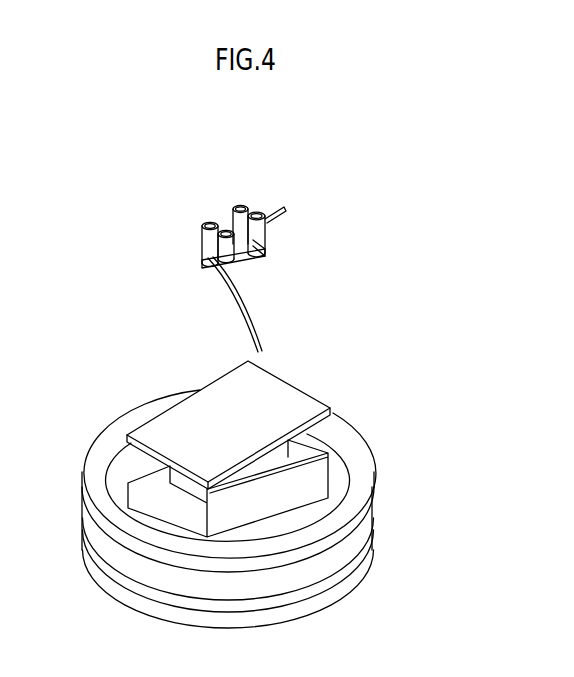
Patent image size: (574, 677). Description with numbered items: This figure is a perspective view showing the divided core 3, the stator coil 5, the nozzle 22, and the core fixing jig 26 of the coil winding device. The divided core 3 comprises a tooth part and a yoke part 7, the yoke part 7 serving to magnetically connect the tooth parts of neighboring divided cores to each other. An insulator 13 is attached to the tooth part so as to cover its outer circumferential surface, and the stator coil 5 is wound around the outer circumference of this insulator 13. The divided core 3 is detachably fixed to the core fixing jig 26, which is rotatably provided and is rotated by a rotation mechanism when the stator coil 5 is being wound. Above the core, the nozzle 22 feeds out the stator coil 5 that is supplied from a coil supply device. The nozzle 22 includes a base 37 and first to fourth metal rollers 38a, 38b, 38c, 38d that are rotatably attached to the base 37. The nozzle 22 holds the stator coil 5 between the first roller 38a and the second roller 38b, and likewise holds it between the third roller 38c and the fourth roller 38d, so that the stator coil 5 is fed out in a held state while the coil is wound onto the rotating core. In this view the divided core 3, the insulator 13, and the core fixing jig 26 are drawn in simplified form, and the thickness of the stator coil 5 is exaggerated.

The divided core 3 is at (189, 372).
The stator coil 5 is at (265, 347).
The yoke part 7 is at (248, 499).
The insulator 13 is at (296, 434).
The nozzle 22 is at (237, 218).
The core fixing jig 26 is at (103, 440).
The base 37 is at (257, 260).
The first roller 38a is at (243, 199).
The second roller 38b is at (267, 233).
The third roller 38c is at (200, 240).
The fourth roller 38d is at (250, 268).